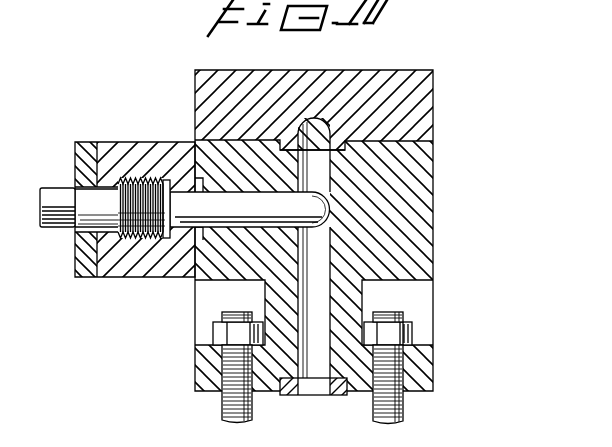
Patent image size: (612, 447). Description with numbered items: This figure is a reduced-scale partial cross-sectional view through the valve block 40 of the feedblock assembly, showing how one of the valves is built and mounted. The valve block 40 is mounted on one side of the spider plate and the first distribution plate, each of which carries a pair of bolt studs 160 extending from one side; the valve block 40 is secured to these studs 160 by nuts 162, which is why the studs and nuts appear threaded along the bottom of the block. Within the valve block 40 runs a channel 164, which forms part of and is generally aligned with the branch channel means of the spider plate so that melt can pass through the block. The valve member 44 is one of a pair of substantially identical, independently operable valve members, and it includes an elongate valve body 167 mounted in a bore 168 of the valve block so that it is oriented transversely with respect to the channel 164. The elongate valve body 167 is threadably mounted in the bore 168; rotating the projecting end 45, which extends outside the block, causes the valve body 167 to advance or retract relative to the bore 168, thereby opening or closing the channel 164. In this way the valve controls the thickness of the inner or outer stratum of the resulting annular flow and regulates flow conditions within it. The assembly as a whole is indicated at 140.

The clamping fixture 140 is at (218, 195).
The valve block 40 is at (434, 219).
The valve member 44 is at (56, 186).
The projecting end 45 is at (46, 226).
The bolt studs 160 is at (252, 408).
The nuts 162 is at (213, 331).
The channel 164 is at (328, 247).
The elongate valve body 167 is at (251, 201).
The bore 168 is at (222, 228).